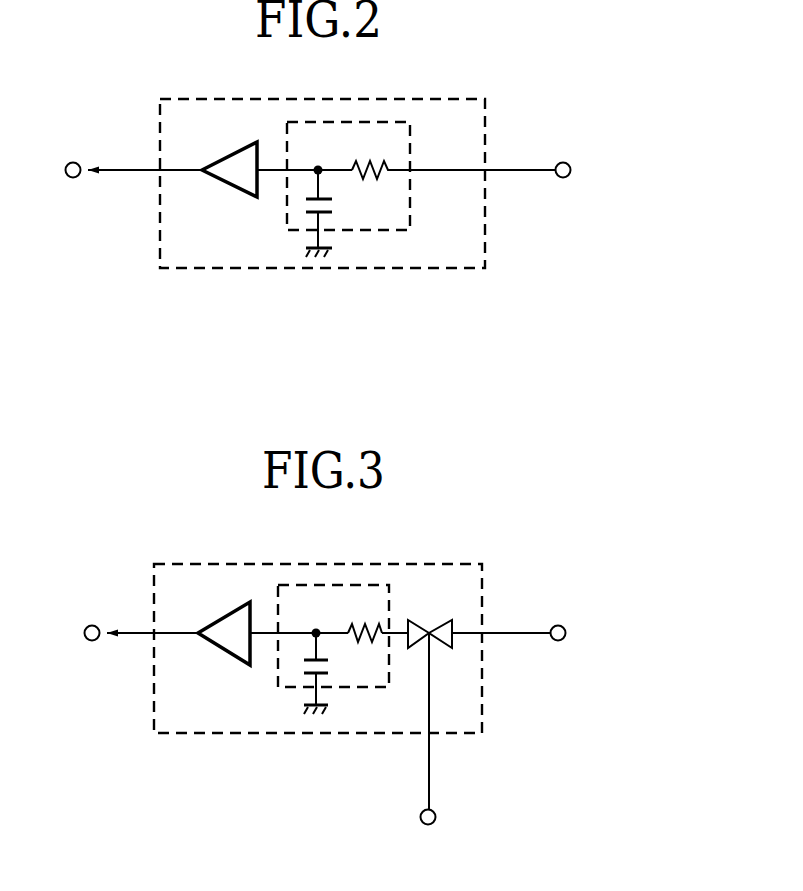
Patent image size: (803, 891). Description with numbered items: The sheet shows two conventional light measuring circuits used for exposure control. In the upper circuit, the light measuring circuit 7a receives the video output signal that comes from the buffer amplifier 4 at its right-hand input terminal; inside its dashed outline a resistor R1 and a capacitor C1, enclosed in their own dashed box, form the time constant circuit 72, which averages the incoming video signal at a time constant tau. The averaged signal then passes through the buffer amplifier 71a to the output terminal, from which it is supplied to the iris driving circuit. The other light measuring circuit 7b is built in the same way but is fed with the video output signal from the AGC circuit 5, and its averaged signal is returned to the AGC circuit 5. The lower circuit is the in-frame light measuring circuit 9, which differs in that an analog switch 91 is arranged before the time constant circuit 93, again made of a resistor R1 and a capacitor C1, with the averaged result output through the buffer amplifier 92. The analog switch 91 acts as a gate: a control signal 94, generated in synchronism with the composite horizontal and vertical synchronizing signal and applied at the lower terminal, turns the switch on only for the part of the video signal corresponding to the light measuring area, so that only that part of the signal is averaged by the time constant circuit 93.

In FIG. 2, the light measuring circuit 7a is at (311, 214).
In FIG. 2, the light measuring circuit 7b is at (327, 268).
In FIG. 2, the buffer amplifier 71a is at (223, 181).
In FIG. 2, the time constant circuit 72 is at (410, 153).
In FIG. 2, the resistor R1 is at (358, 162).
In FIG. 3, the resistor R1 is at (357, 625).
In FIG. 2, the capacitor C1 is at (333, 206).
In FIG. 3, the capacitor C1 is at (330, 668).
In FIG. 2, the buffer amplifier 4 is at (591, 172).
In FIG. 3, the buffer amplifier 4 is at (587, 637).
In FIG. 2, the AGC circuit 5 is at (591, 172).
In FIG. 3, the AGC circuit 5 is at (587, 637).
In FIG. 3, the light measuring circuit 9 is at (452, 564).
In FIG. 3, the analog switch 91 is at (422, 628).
In FIG. 3, the buffer amplifier 92 is at (221, 647).
In FIG. 3, the time constant circuit 93 is at (360, 688).
In FIG. 3, the control signal 94 is at (427, 835).